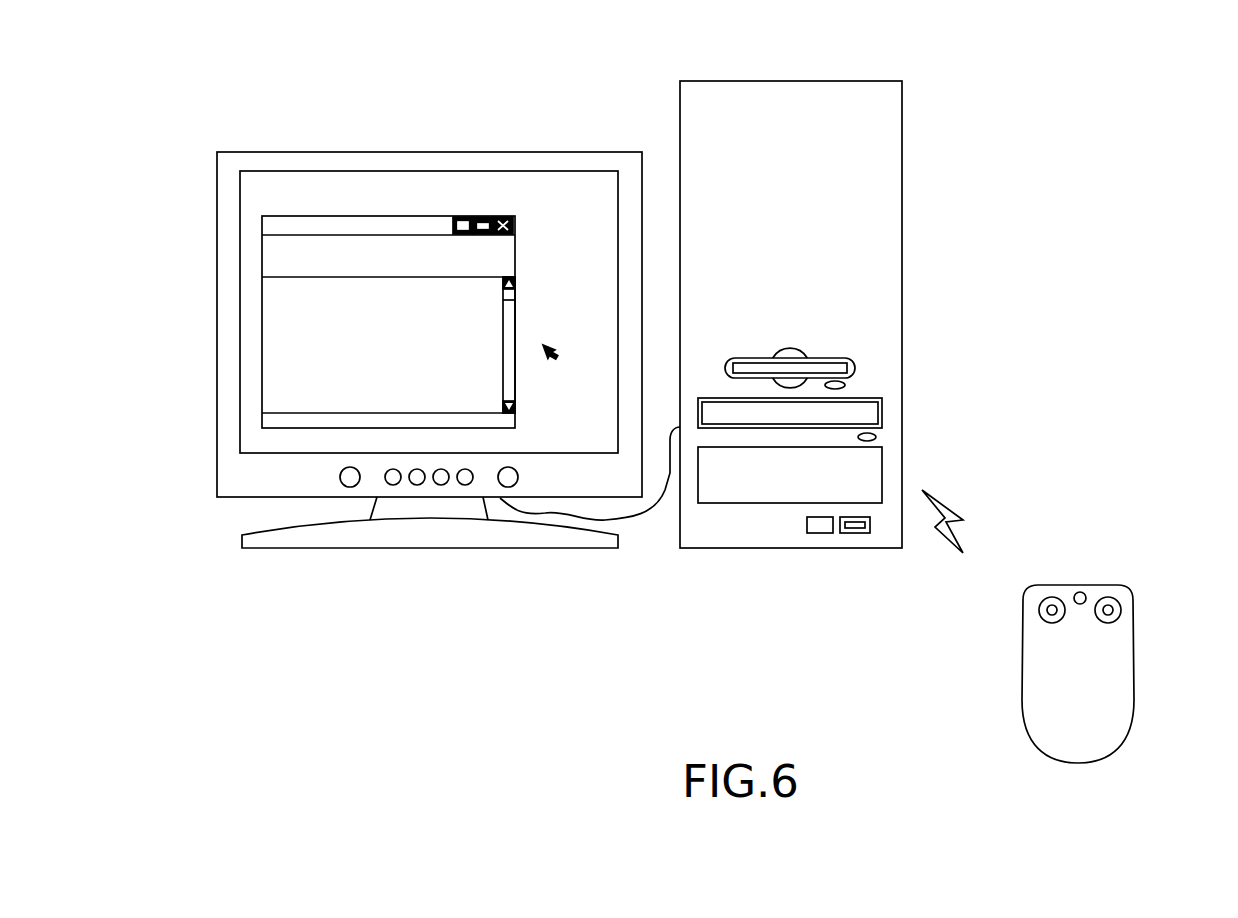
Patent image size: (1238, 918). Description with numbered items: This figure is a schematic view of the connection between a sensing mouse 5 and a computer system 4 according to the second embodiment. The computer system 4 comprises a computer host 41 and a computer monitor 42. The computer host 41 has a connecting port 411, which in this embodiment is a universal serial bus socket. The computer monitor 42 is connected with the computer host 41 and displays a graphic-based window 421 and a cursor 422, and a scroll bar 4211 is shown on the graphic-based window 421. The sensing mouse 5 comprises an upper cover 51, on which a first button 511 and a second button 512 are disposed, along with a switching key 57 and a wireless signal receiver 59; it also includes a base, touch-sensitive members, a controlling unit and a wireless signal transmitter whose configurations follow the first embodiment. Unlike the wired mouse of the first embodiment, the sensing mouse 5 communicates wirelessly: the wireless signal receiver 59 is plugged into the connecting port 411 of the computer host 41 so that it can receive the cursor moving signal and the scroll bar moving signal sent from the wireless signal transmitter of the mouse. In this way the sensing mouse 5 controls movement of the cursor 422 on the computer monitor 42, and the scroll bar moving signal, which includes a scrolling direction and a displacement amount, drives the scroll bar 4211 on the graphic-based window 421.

The computer system 4 is at (705, 58).
The computer host 41 is at (795, 90).
The connecting port 411 is at (855, 532).
The wireless signal receiver 59 is at (815, 528).
The computer monitor 42 is at (524, 148).
The graphic-based window 421 is at (343, 257).
The scroll bar 4211 is at (508, 320).
The cursor 422 is at (560, 362).
The sensing mouse 5 is at (1102, 547).
The upper cover 51 is at (1120, 682).
The first button 511 is at (1038, 600).
The second button 512 is at (1118, 605).
The switching key 57 is at (1078, 592).